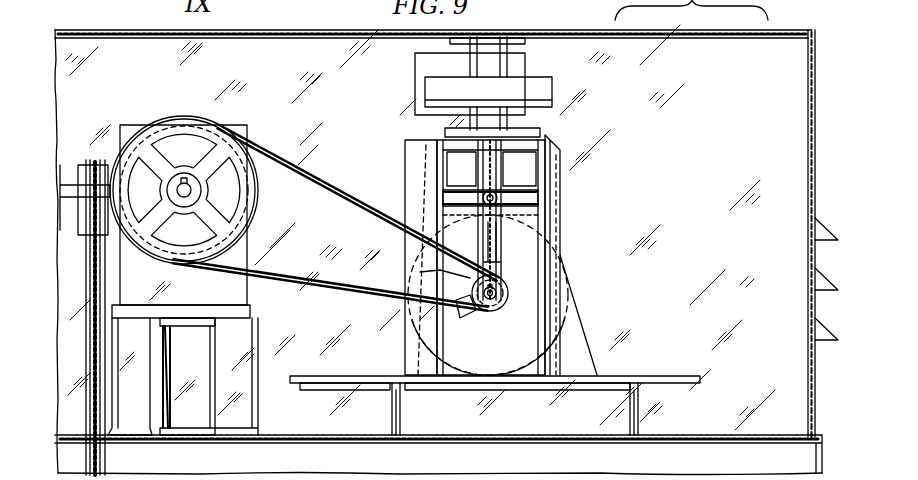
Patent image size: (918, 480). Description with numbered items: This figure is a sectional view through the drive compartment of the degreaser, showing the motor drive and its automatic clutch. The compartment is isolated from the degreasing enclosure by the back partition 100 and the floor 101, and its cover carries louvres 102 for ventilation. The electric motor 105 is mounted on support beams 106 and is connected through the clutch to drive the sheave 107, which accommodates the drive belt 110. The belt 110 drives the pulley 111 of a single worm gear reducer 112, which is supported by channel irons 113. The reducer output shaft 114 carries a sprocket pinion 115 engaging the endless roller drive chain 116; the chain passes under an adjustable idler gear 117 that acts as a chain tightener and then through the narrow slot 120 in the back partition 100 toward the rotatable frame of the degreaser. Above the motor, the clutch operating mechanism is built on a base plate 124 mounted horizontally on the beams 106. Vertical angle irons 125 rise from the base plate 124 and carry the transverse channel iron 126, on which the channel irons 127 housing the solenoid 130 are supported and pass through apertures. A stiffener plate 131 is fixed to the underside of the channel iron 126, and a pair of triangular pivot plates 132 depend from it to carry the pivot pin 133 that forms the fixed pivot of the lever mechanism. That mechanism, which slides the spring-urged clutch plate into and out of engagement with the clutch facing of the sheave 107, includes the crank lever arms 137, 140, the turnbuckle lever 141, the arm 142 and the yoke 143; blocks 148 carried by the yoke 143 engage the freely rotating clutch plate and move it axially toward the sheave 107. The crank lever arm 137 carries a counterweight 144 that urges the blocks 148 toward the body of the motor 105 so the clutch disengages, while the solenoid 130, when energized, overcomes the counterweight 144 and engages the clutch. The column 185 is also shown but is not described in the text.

The back partition 100 is at (435, 251).
The floor 101 is at (732, 435).
The louvres 102 is at (818, 272).
The electric motor 105 is at (488, 295).
The support beams 106 is at (396, 412).
The sheave 107 is at (498, 310).
The drive belt 110 is at (325, 222).
The pulley 111 is at (240, 198).
The single worm gear reducer 112 is at (248, 308).
The channel irons 113 is at (212, 372).
The output shaft 114 is at (148, 258).
The sprocket pinion 115 is at (122, 325).
The endless roller drive chain 116 is at (125, 372).
The idler gear 117 is at (95, 165).
The narrow slot 120 is at (108, 165).
The base plate 124 is at (336, 380).
The vertical angle irons 125 is at (416, 180).
The transverse channel iron 126 is at (548, 132).
The channel irons 127 is at (505, 58).
The solenoid 130 is at (418, 85).
The stiffener plate 131 is at (450, 140).
The triangular pivot plates 132 is at (494, 169).
The pivot pin 133 is at (548, 255).
The crank lever arm 137 is at (470, 160).
The crank lever arm 140 is at (490, 200).
The turnbuckle lever 141 is at (492, 203).
The arm 142 is at (488, 233).
The yoke 143 is at (470, 281).
The counterweight 144 is at (545, 90).
The blocks 148 is at (466, 316).
The right frame column 185 is at (562, 172).